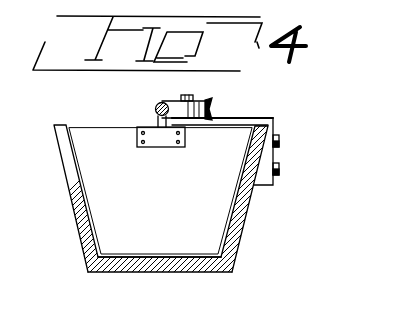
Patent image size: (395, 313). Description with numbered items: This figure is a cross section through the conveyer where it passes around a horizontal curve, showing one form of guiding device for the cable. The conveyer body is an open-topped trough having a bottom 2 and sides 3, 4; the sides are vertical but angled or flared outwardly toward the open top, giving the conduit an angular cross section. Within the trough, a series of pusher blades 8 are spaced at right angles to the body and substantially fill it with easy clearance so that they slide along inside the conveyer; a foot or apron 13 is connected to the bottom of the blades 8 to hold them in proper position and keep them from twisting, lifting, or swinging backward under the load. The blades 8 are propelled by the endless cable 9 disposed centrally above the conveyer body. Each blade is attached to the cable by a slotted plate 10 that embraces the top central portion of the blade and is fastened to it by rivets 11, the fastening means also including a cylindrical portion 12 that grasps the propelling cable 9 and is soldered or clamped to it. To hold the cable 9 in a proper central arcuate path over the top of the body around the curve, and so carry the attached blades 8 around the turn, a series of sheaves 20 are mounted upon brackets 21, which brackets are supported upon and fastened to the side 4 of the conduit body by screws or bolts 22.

The bottom 2 is at (163, 270).
The side 3 is at (67, 182).
The side 4 is at (243, 228).
The blades 8 is at (110, 212).
The endless cable 9 is at (155, 110).
The slotted plate 10 is at (163, 141).
The rivets 11 is at (143, 134).
The cylindrical portion 12 is at (156, 104).
The foot or apron 13 is at (150, 255).
The sheaves 20 is at (211, 106).
The brackets 21 is at (250, 120).
The screws or bolts 22 is at (279, 172).